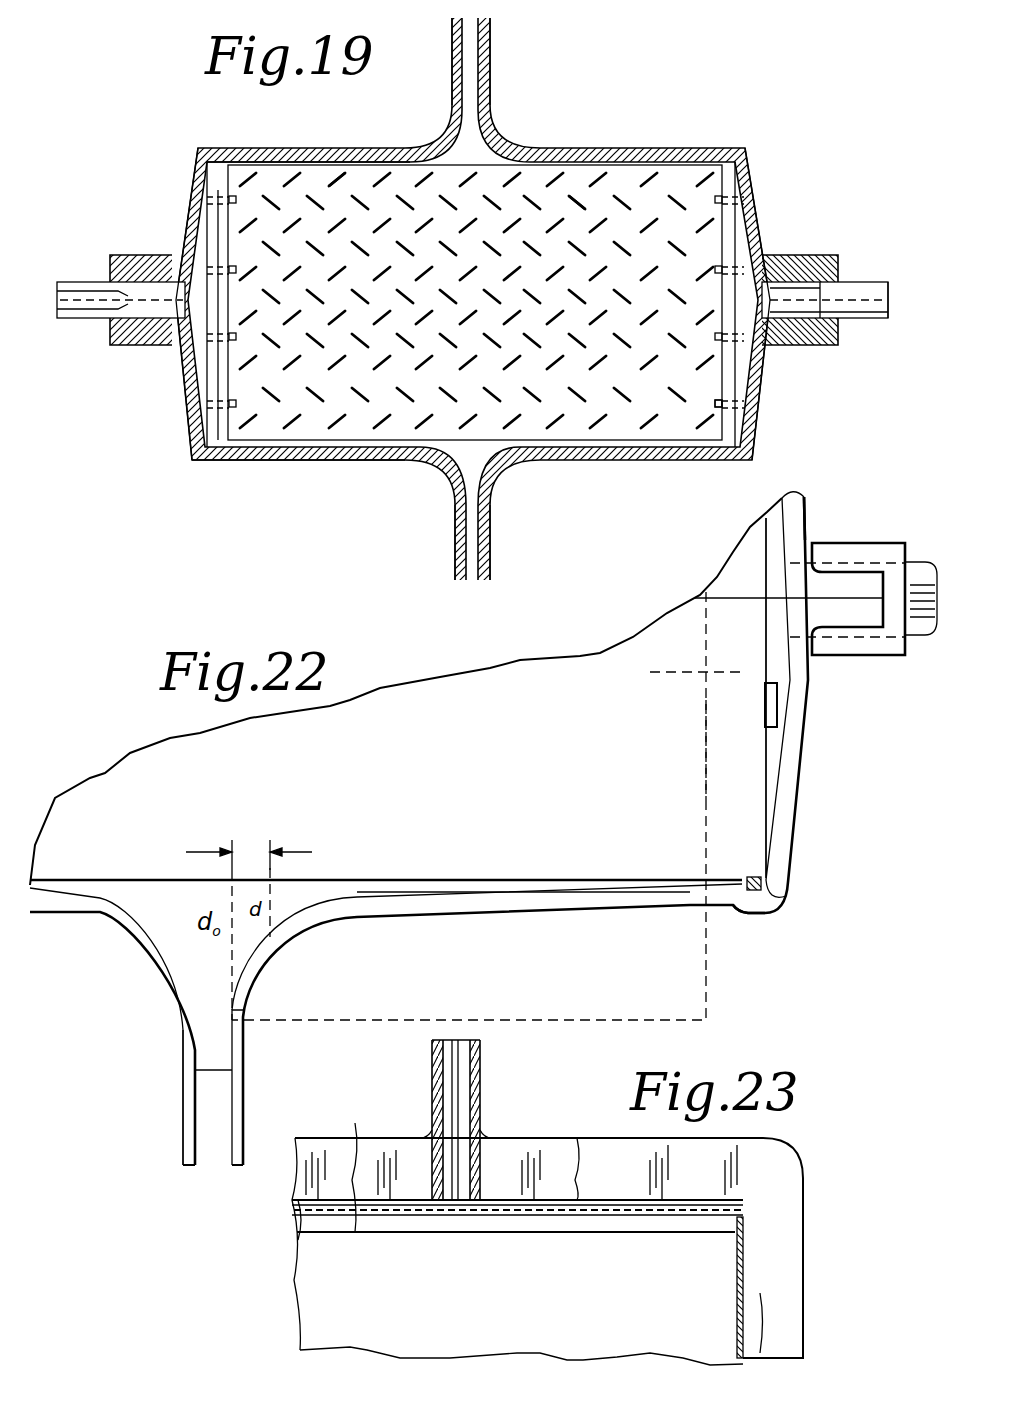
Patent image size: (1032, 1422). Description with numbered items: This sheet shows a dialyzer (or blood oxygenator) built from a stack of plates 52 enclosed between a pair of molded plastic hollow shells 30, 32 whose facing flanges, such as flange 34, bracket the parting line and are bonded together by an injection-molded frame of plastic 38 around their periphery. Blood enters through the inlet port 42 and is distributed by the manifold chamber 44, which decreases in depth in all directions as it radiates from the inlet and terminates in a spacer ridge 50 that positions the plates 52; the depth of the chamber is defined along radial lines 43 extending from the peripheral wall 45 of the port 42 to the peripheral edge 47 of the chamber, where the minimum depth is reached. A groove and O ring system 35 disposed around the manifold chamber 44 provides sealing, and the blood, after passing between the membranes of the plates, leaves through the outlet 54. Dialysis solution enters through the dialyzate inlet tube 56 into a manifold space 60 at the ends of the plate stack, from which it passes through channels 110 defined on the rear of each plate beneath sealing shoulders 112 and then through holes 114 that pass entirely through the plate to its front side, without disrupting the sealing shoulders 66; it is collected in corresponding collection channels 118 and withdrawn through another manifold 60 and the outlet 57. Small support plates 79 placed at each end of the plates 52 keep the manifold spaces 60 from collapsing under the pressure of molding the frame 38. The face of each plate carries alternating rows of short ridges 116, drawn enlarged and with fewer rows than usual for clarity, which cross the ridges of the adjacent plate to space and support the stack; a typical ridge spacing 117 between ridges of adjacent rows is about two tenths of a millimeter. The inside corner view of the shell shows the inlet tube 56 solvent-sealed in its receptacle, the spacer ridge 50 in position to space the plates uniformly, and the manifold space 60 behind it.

In FIG. 19, the hollow shell 30 is at (680, 150).
In FIG. 22, the hollow shell 30 is at (800, 763).
In FIG. 23, the hollow shell 30 is at (514, 1308).
In FIG. 19, the hollow shell 32 is at (310, 462).
In FIG. 22, the hollow shell 32 is at (808, 514).
In FIG. 23, the flange 34 is at (783, 1183).
In FIG. 22, the groove and O ring system 35 is at (790, 898).
In FIG. 23, the groove and O ring system 35 is at (300, 1238).
In FIG. 19, the frame of plastic 38 is at (125, 255).
In FIG. 22, the frame of plastic 38 is at (875, 525).
In FIG. 19, the blood inlet port 42 is at (490, 545).
In FIG. 22, the blood inlet port 42 is at (234, 1097).
In FIG. 22, the radial line 43 is at (665, 1020).
In FIG. 19, the manifold chamber 44 is at (414, 160).
In FIG. 22, the manifold chamber 44 is at (335, 905).
In FIG. 22, the peripheral wall 45 is at (192, 1070).
In FIG. 22, the peripheral edge 47 is at (700, 760).
In FIG. 22, the spacer ridge 50 is at (745, 892).
In FIG. 23, the spacer ridge 50 is at (521, 1164).
In FIG. 19, the plates 52 is at (608, 390).
In FIG. 22, the plates 52 is at (526, 776).
In FIG. 19, the blood outlet 54 is at (478, 48).
In FIG. 19, the dialyzate inlet tube 56 is at (870, 296).
In FIG. 22, the dialyzate inlet tube 56 is at (915, 562).
In FIG. 23, the dialyzate inlet tube 56 is at (472, 1062).
In FIG. 19, the dialysis solution outlet 57 is at (65, 280).
In FIG. 19, the manifold space 60 is at (190, 215).
In FIG. 22, the manifold space 60 is at (776, 673).
In FIG. 23, the manifold space 60 is at (575, 1138).
In FIG. 22, the sealing shoulders 66 is at (670, 676).
In FIG. 19, the support plates 79 is at (200, 372).
In FIG. 22, the support plates 79 is at (778, 705).
In FIG. 19, the channels 110 is at (745, 385).
In FIG. 19, the sealing shoulders 112 is at (195, 150).
In FIG. 19, the holes 114 is at (716, 410).
In FIG. 19, the short ridges 116 is at (580, 200).
In FIG. 19, the ridge spacing 117 is at (345, 205).
In FIG. 19, the collection channels 118 is at (218, 195).